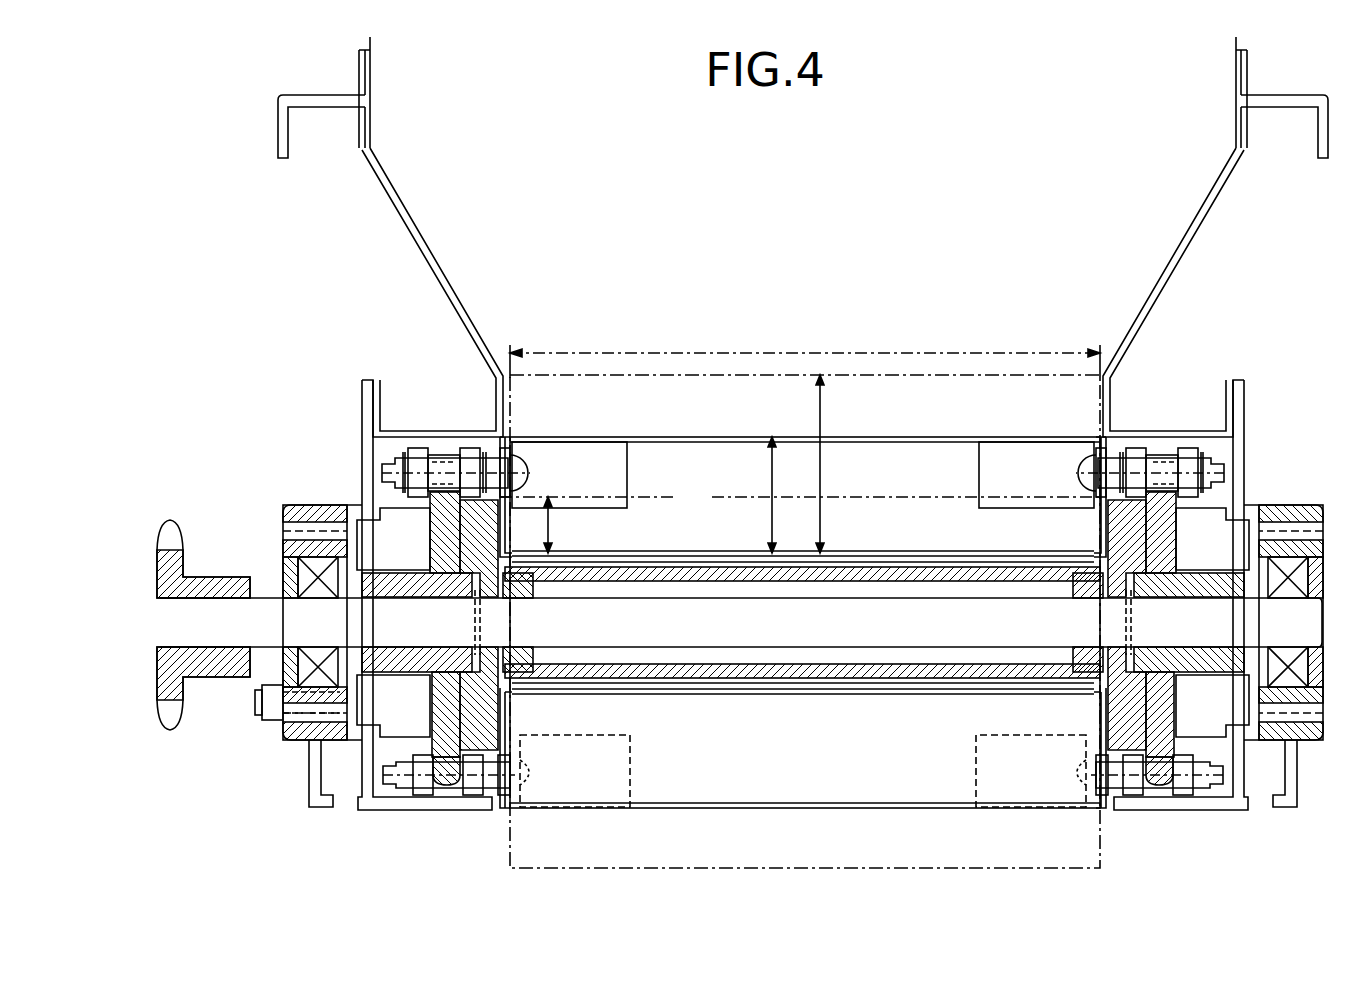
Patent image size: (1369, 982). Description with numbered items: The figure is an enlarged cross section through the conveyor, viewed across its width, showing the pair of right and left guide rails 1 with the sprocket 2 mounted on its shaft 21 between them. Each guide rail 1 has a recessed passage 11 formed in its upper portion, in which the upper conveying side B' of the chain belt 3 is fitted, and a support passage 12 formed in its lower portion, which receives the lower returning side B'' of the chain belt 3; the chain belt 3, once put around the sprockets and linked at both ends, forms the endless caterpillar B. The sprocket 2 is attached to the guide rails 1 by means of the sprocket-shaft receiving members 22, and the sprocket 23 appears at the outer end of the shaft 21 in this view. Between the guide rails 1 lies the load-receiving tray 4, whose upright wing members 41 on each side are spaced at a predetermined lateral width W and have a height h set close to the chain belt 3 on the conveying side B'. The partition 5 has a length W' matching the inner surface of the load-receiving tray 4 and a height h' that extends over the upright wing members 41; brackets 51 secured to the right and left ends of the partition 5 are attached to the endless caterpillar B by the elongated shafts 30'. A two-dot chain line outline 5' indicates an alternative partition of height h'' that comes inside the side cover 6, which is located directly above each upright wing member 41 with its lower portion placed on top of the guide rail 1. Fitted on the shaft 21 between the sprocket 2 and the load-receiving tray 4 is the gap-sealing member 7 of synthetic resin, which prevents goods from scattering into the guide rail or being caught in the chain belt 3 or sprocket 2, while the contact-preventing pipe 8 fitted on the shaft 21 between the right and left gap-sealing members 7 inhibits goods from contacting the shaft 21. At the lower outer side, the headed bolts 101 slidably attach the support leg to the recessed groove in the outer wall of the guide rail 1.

The guide rail 1 is at (358, 445).
The sprocket 2 is at (440, 515).
The chain belt 3 is at (445, 453).
The load-receiving tray 4 is at (740, 552).
The partition 5 is at (805, 615).
The roller outline 5' is at (805, 612).
The side cover 6 is at (473, 330).
The gap-sealing member 7 is at (490, 720).
The contact-preventing pipe 8 is at (835, 575).
The recessed passage 11 is at (410, 497).
The support passage 12 is at (442, 790).
The shaft 21 is at (868, 597).
The sprocket-shaft receiving member 22 is at (290, 572).
The sprocket 23 is at (182, 548).
The elongated shaft 30' is at (847, 618).
The upright wing member 41 is at (503, 537).
The bracket 51 is at (515, 455).
The headed bolt 101 is at (305, 737).
The endless caterpillar B is at (834, 564).
The conveying side B' is at (801, 564).
The lower returning side B'' is at (1158, 806).
The lateral width W is at (800, 497).
The partition length W' is at (805, 358).
The wing member height h is at (561, 525).
The partition height h' is at (773, 495).
The alternative partition height h'' is at (822, 464).